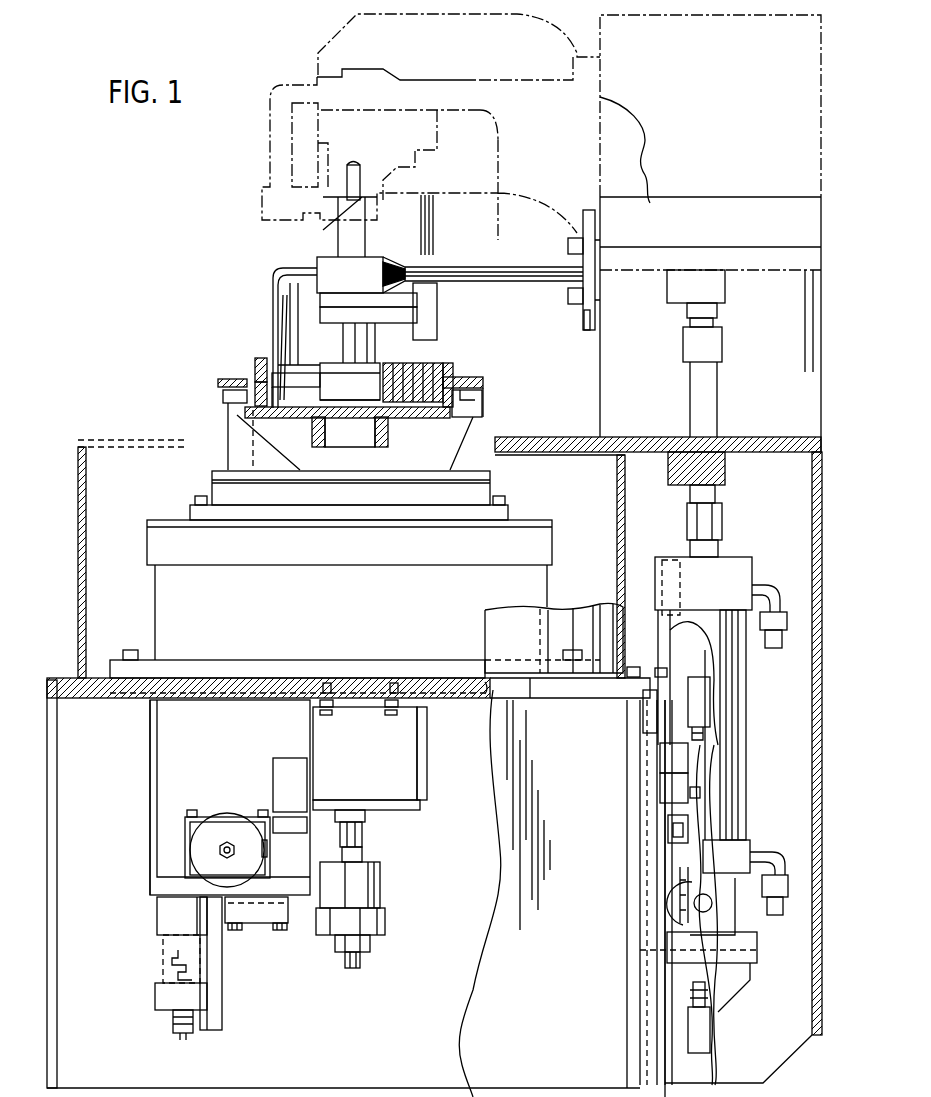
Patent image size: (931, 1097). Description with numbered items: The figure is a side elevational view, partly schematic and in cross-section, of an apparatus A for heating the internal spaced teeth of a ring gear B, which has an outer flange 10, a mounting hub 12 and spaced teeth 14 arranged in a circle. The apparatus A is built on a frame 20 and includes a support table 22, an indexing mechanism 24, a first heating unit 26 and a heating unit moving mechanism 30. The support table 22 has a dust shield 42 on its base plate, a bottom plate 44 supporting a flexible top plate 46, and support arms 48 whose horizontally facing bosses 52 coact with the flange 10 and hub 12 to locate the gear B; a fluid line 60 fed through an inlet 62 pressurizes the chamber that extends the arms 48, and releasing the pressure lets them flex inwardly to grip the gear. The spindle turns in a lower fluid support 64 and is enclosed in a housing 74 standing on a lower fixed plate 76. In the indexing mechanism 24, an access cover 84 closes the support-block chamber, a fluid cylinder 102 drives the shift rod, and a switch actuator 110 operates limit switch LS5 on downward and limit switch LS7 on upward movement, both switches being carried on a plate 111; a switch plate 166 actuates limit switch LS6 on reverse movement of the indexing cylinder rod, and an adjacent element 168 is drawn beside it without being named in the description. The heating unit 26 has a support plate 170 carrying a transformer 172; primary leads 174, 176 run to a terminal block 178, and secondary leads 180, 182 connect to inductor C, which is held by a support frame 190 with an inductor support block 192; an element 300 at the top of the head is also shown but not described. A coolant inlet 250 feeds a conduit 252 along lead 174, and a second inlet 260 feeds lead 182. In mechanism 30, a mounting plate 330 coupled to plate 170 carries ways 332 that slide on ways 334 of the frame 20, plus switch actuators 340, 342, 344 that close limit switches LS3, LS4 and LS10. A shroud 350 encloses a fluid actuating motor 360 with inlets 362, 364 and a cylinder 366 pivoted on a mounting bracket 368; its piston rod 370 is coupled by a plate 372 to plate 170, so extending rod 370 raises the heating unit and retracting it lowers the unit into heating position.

The apparatus A is at (150, 200).
The first heating unit 26 is at (678, 196).
The transformer 172 is at (625, 150).
The support plate 170 is at (770, 437).
The bolt 300 is at (358, 164).
The primary power lead 174 is at (448, 258).
The terminal block 178 is at (372, 257).
The primary power lead 176 is at (490, 282).
The conduit 252 is at (560, 262).
The coolant inlet 250 is at (585, 212).
The inlet 260 is at (585, 322).
The support frame 190 is at (385, 305).
The secondary lead 180 is at (290, 272).
The secondary lead 182 is at (290, 300).
The ring gear B is at (256, 358).
The inductor support block 192 is at (258, 375).
The inductor C is at (248, 392).
The support table 22 is at (218, 418).
The mounting hub 12 is at (260, 418).
The spaced teeth 14 is at (388, 367).
The outer flange 10 is at (465, 388).
The horizontally facing boss 52 is at (480, 402).
The support arm 48 is at (470, 432).
The top plate 46 is at (490, 473).
The bottom plate 44 is at (508, 512).
The dust shield 42 is at (552, 542).
The housing 74 is at (155, 600).
The lower fixed plate 76 is at (325, 668).
The ways 332 is at (655, 666).
The frame 20 is at (47, 678).
The heating unit moving mechanism 30 is at (752, 708).
The plate 372 is at (725, 470).
The piston rod 370 is at (722, 520).
The mounting plate 330 is at (684, 658).
The inlet 362 is at (780, 588).
The switch actuator 340 is at (747, 708).
The shroud 350 is at (745, 718).
The fluid actuating motor 360 is at (755, 775).
The cylinder 366 is at (746, 822).
The inlet 364 is at (776, 862).
The switch actuator 344 is at (690, 902).
The mounting bracket 368 is at (757, 955).
The switch actuator 342 is at (712, 1022).
The ways 334 is at (650, 710).
The limit switch LS3 is at (660, 755).
The limit switch LS4 is at (660, 788).
The limit switch LS10 is at (660, 838).
The indexing mechanism 24 is at (177, 768).
The access cover 84 is at (150, 758).
The switch plate 166 is at (228, 818).
The limit switch LS6 is at (308, 780).
The control box 168 is at (310, 732).
The fluid line 60 is at (362, 858).
The lower fluid support 64 is at (382, 900).
The inlet 62 is at (360, 970).
The limit switch LS7 is at (227, 954).
The fluid cylinder 102 is at (160, 957).
The plate 111 is at (228, 975).
The switch actuator 110 is at (178, 972).
The limit switch LS5 is at (222, 1020).